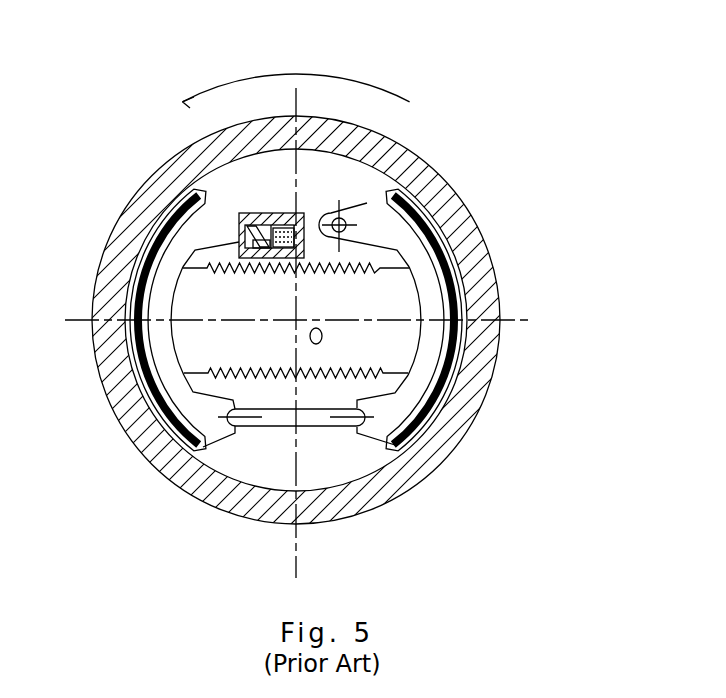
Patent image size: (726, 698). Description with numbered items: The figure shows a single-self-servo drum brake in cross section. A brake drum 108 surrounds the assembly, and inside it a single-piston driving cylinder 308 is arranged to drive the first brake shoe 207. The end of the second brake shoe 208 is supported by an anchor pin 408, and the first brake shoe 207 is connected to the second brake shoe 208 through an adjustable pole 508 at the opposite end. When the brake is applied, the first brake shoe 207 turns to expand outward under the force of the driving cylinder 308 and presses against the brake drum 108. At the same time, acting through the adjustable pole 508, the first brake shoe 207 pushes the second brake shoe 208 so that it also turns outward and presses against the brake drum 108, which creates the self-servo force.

The brake drum 108 is at (475, 250).
The first brake shoe 207 is at (167, 375).
The second brake shoe 208 is at (410, 392).
The single-piston driving cylinder 308 is at (247, 237).
The anchor pin 408 is at (345, 220).
The adjustable pole 508 is at (325, 421).